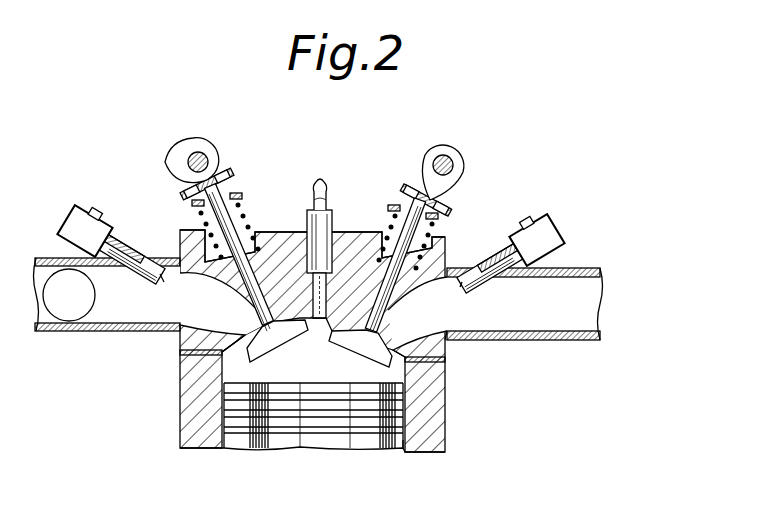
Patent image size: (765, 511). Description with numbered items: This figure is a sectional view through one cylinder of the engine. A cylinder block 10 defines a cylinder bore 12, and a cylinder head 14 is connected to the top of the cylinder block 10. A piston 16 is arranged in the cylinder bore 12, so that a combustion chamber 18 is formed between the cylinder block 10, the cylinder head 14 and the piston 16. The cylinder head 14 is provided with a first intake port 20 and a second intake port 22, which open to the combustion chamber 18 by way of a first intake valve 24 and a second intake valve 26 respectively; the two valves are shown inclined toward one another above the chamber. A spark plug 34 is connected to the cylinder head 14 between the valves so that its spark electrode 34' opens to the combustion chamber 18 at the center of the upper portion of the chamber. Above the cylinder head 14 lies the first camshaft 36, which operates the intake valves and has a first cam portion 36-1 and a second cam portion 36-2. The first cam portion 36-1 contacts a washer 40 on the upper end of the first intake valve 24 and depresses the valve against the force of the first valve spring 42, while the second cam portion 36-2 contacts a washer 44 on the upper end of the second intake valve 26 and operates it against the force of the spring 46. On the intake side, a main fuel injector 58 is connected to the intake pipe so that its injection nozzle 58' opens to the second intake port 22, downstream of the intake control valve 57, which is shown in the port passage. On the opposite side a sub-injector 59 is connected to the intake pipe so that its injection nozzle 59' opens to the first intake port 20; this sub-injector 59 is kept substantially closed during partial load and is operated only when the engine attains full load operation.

The cylinder block 10 is at (443, 405).
The cylinder bore 12 is at (433, 450).
The cylinder head 14 is at (177, 353).
The piston 16 is at (302, 440).
The combustion chamber 18 is at (330, 371).
The first intake port 20 is at (443, 343).
The second intake port 22 is at (177, 330).
The first intake valve 24 is at (377, 252).
The second intake valve 26 is at (271, 237).
The spark plug 34 is at (309, 239).
The spark electrode 34' is at (298, 343).
The first camshaft 36 is at (190, 160).
The first cam portion 36-1 is at (443, 142).
The second cam portion 36-2 is at (198, 140).
The washer 40 is at (403, 187).
The first valve spring 42 is at (395, 227).
The washer 44 is at (232, 172).
The spring 46 is at (240, 207).
The intake control valve 57 is at (60, 308).
The main fuel injector 58 is at (114, 227).
The injection nozzle 58' is at (142, 297).
The sub-injector 59 is at (506, 236).
The injection nozzle 59' is at (486, 304).